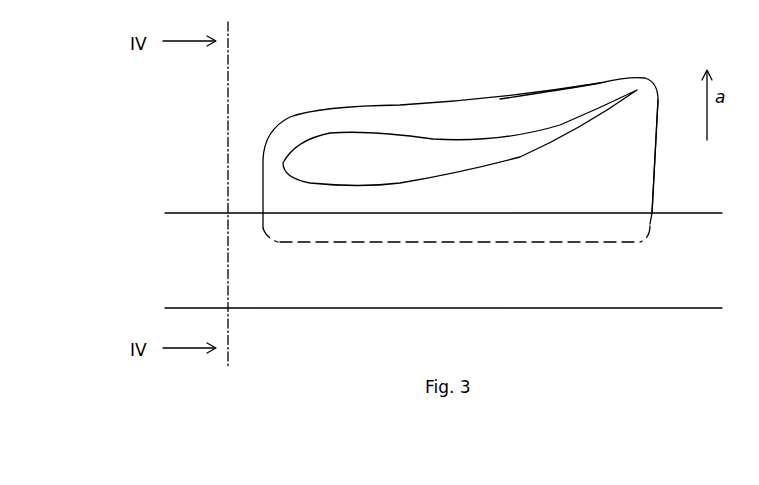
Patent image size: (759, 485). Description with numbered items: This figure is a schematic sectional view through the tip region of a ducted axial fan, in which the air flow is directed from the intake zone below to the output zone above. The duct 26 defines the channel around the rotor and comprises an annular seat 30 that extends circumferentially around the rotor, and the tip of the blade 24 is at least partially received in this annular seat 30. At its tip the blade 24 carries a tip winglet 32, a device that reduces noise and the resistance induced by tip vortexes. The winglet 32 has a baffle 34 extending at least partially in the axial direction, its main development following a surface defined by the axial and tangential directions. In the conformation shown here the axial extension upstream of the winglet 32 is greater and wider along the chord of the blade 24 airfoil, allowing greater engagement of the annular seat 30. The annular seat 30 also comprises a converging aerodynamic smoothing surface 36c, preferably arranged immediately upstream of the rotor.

The blade 24 is at (405, 121).
The duct 26 is at (346, 87).
The annular seat 30 is at (218, 250).
The tip winglet 32 is at (527, 120).
The baffle 34 is at (620, 175).
The converging aerodynamic smoothing surface 36c is at (612, 280).